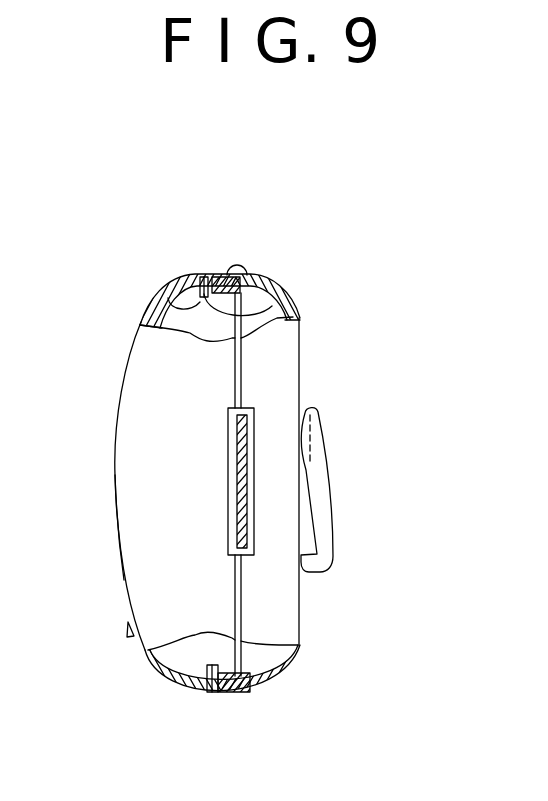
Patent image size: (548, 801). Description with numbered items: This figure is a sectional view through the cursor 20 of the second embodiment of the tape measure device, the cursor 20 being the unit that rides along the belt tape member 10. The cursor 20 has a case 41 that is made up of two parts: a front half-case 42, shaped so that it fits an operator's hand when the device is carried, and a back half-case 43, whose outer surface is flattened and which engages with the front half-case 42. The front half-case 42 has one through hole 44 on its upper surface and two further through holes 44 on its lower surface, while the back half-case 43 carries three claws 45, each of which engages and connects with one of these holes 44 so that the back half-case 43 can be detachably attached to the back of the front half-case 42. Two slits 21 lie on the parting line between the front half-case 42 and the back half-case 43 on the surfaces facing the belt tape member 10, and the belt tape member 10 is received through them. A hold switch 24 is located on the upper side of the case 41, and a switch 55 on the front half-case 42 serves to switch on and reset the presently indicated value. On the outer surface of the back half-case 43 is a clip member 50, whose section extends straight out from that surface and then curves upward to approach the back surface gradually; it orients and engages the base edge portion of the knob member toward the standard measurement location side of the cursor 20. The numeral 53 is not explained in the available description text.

The belt tape member 10 is at (240, 512).
The cursor 20 is at (137, 385).
The slit 21 is at (228, 445).
The hold switch 24 is at (234, 265).
The case 41 is at (303, 165).
The front half-case 42 is at (168, 281).
The back half-case 43 is at (292, 283).
The through hole 44 is at (150, 305).
The claw 45 is at (293, 308).
The clip member 50 is at (333, 510).
The side wall 53 is at (113, 498).
The switch 55 is at (130, 626).